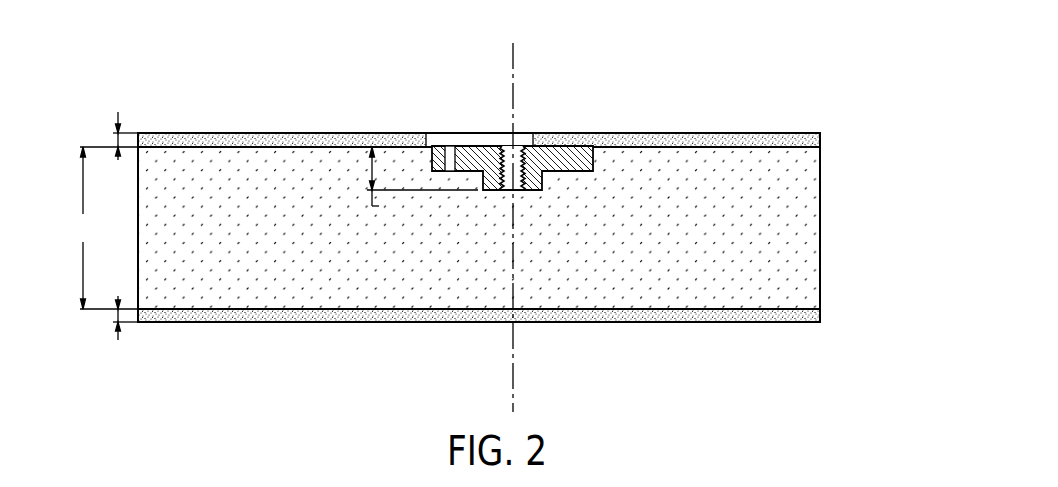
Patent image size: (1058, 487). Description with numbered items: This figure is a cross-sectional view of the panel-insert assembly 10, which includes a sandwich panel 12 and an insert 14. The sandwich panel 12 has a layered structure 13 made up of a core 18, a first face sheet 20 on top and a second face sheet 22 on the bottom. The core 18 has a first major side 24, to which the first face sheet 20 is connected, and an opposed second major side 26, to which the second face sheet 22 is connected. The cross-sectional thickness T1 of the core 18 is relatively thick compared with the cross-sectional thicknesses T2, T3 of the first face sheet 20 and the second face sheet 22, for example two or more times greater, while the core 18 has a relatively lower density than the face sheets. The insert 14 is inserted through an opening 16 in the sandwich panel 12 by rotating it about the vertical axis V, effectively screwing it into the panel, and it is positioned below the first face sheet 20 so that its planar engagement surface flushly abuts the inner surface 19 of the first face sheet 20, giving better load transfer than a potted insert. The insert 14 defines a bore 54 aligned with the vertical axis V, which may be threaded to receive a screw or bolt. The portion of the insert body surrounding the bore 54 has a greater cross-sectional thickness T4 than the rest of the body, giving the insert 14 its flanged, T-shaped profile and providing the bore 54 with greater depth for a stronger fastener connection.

The panel-insert assembly 10 is at (479, 174).
The sandwich panel 12 is at (148, 133).
The layered structure 13 is at (880, 130).
The insert 14 is at (571, 165).
The opening 16 is at (533, 140).
The core 18 is at (821, 220).
The inner surface 19 is at (718, 147).
The first face sheet 20 is at (815, 140).
The second face sheet 22 is at (815, 316).
The first major side 24 is at (645, 147).
The second major side 26 is at (658, 310).
The bore 54 is at (507, 162).
The vertical axis V is at (512, 60).
The cross-sectional thickness of the core T1 is at (81, 228).
The cross-sectional thickness of the first face sheet T2 is at (118, 136).
The cross-sectional thickness of the second face sheet T3 is at (118, 316).
The cross-sectional thickness of the body portion surrounding the bore T4 is at (422, 186).